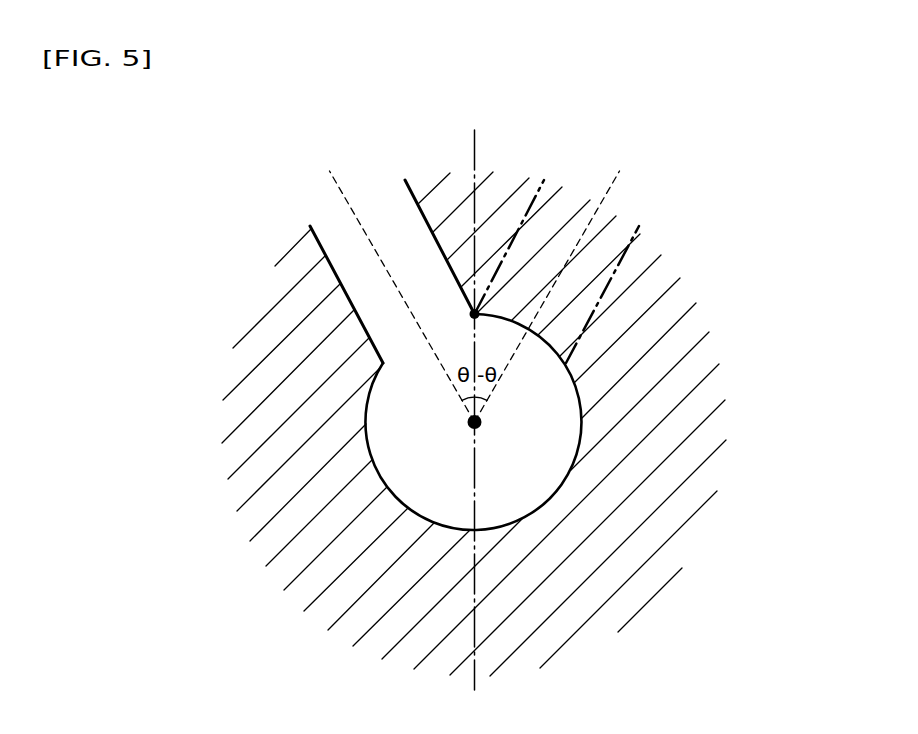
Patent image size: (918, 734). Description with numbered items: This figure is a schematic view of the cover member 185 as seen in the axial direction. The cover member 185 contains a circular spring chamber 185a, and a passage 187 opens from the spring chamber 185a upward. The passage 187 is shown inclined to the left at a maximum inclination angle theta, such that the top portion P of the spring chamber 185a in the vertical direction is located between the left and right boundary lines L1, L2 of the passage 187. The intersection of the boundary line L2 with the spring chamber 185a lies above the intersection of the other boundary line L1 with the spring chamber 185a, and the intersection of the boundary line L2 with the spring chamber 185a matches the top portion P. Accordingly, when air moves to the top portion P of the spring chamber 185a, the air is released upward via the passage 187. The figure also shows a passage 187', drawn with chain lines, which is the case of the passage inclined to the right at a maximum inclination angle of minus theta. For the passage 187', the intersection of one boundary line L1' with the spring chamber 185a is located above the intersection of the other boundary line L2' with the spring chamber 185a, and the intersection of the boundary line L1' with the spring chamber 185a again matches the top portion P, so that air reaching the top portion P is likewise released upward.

The cover member 185 is at (673, 470).
The spring chamber 185a is at (555, 413).
The passage 187 is at (323, 248).
The passage 187' is at (629, 248).
The boundary line L1 is at (299, 294).
The boundary line L2 is at (440, 223).
The boundary line L1' is at (510, 223).
The boundary line L2' is at (657, 294).
The top portion P is at (473, 317).